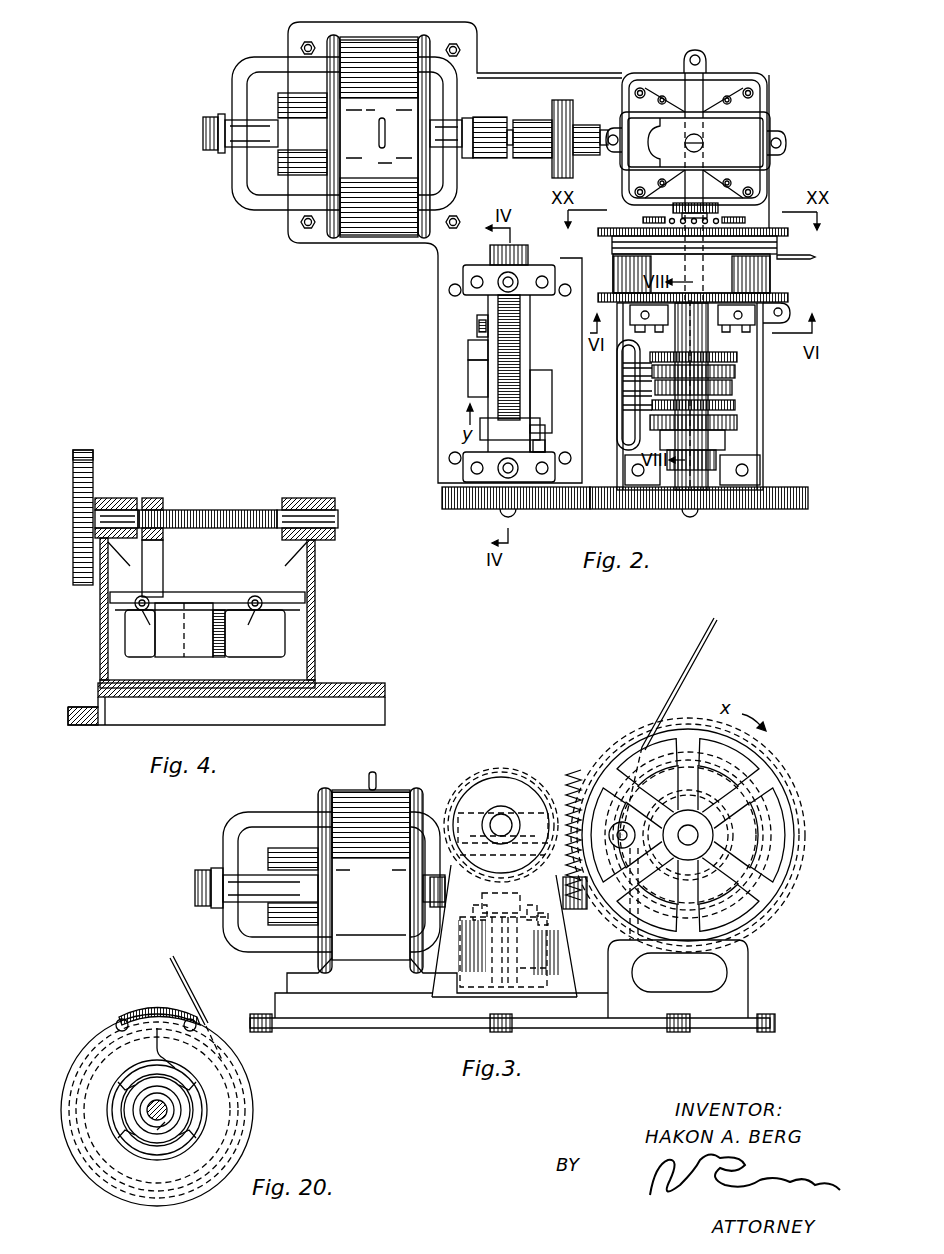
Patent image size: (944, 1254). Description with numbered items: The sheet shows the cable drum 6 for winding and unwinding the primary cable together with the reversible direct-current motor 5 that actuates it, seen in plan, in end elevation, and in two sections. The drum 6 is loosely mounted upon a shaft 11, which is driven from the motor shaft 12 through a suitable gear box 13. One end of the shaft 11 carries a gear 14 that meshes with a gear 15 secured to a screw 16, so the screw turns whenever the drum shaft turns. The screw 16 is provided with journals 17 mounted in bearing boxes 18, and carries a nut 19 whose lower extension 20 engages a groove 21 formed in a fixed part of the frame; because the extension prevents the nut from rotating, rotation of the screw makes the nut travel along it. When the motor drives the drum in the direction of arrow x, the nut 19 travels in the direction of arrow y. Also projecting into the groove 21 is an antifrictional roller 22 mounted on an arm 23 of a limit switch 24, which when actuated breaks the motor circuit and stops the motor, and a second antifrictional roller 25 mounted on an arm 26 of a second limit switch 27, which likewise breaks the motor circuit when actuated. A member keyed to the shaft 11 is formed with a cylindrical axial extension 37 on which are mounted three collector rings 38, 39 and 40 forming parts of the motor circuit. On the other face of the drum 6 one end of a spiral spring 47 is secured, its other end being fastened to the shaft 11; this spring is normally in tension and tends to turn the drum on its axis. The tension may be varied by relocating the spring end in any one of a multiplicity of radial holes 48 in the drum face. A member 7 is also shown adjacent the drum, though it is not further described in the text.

In FIG. 2, the electric motor 5 is at (332, 136).
In FIG. 3, the electric motor 5 is at (350, 790).
In FIG. 2, the drum 6 is at (775, 280).
In FIG. 3, the drum 6 is at (778, 816).
In FIG. 20, the drum 6 is at (92, 1048).
In FIG. 2, the rod 7 is at (815, 257).
In FIG. 3, the rod 7 is at (690, 658).
In FIG. 20, the rod 7 is at (168, 960).
In FIG. 2, the shaft 11 is at (705, 92).
In FIG. 3, the shaft 11 is at (698, 835).
In FIG. 20, the shaft 11 is at (165, 1112).
In FIG. 2, the motor shaft 12 is at (510, 118).
In FIG. 3, the motor shaft 12 is at (583, 910).
In FIG. 2, the gear box 13 is at (768, 115).
In FIG. 2, the gear 14 is at (790, 512).
In FIG. 3, the gear 14 is at (780, 778).
In FIG. 2, the gear 15 is at (455, 510).
In FIG. 4, the gear 15 is at (95, 450).
In FIG. 3, the gear 15 is at (498, 768).
In FIG. 2, the screw 16 is at (497, 375).
In FIG. 4, the screw 16 is at (245, 510).
In FIG. 3, the screw 16 is at (508, 815).
In FIG. 2, the journals 17 is at (520, 275).
In FIG. 4, the journals 17 is at (125, 512).
In FIG. 3, the journals 17 is at (495, 808).
In FIG. 2, the bearing boxes 18 is at (470, 272).
In FIG. 4, the bearing boxes 18 is at (112, 498).
In FIG. 3, the bearing boxes 18 is at (470, 800).
In FIG. 2, the nut 19 is at (535, 430).
In FIG. 4, the nut 19 is at (162, 500).
In FIG. 3, the nut 19 is at (480, 818).
In FIG. 4, the lower extension 20 is at (163, 565).
In FIG. 3, the lower extension 20 is at (482, 903).
In FIG. 2, the groove 21 is at (472, 387).
In FIG. 4, the groove 21 is at (210, 592).
In FIG. 3, the groove 21 is at (503, 846).
In FIG. 2, the antifrictional roller 22 is at (545, 446).
In FIG. 4, the antifrictional roller 22 is at (135, 606).
In FIG. 3, the antifrictional roller 22 is at (548, 937).
In FIG. 2, the arm 23 is at (545, 436).
In FIG. 4, the arm 23 is at (150, 622).
In FIG. 2, the limit switch 24 is at (545, 392).
In FIG. 4, the limit switch 24 is at (205, 630).
In FIG. 3, the limit switch 24 is at (532, 967).
In FIG. 2, the second antifrictional roller 25 is at (478, 318).
In FIG. 4, the second antifrictional roller 25 is at (262, 606).
In FIG. 3, the second antifrictional roller 25 is at (492, 925).
In FIG. 2, the arm 26 is at (478, 326).
In FIG. 4, the arm 26 is at (250, 620).
In FIG. 2, the second limit switch 27 is at (478, 352).
In FIG. 4, the second limit switch 27 is at (225, 650).
In FIG. 3, the second limit switch 27 is at (468, 977).
In FIG. 2, the cylindrical axial extension 37 is at (740, 355).
In FIG. 2, the collector ring 38 is at (735, 388).
In FIG. 2, the collector ring 39 is at (738, 370).
In FIG. 2, the collector ring 40 is at (732, 410).
In FIG. 2, the spiral spring 47 is at (745, 220).
In FIG. 20, the spiral spring 47 is at (205, 1086).
In FIG. 2, the radial holes 48 is at (672, 207).
In FIG. 20, the radial holes 48 is at (143, 1016).